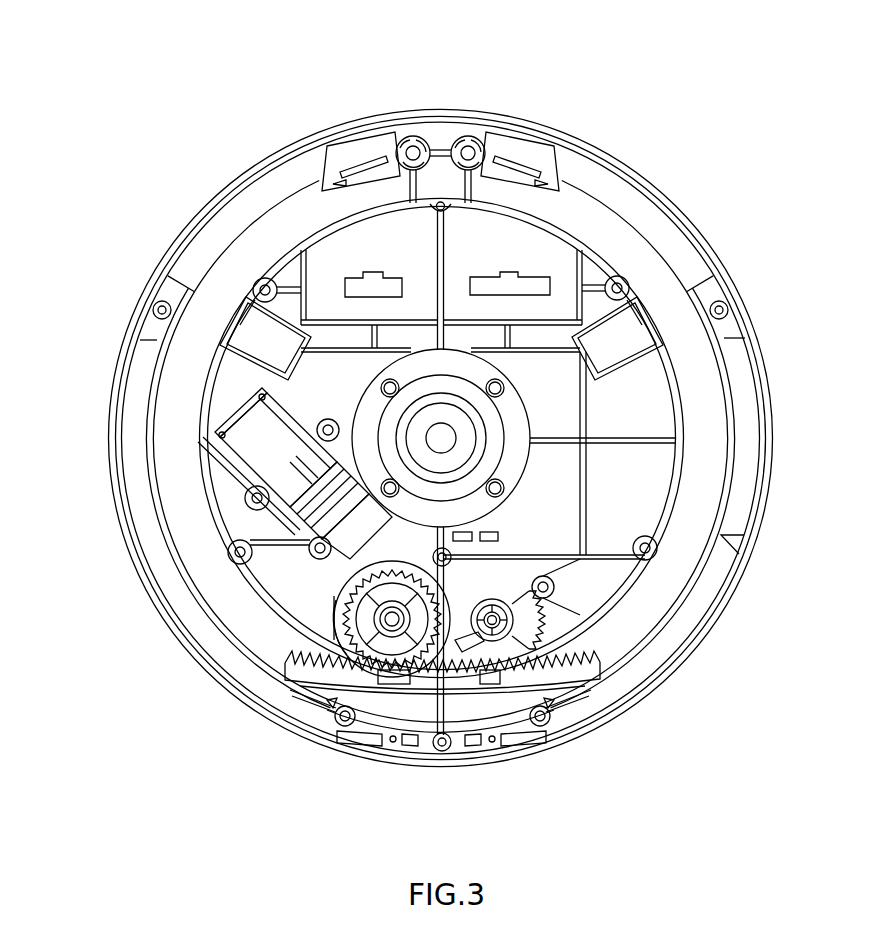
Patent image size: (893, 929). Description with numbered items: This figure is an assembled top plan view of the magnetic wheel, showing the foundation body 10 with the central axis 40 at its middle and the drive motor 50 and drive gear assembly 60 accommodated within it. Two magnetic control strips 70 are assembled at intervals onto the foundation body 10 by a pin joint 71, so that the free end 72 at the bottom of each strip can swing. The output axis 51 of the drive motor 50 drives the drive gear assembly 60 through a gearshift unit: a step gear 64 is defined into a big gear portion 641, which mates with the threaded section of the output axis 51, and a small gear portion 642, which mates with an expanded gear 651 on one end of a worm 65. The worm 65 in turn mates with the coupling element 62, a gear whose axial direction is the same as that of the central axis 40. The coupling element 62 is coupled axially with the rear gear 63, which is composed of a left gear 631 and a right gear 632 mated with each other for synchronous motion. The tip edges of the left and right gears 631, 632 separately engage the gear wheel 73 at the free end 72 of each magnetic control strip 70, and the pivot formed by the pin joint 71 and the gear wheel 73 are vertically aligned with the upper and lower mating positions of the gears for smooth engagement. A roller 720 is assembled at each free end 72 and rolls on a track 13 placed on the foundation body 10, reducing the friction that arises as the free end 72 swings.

The foundation body 10 is at (662, 588).
The track 13 is at (462, 725).
The central axis 40 is at (492, 437).
The drive motor 50 is at (247, 458).
The output axis 51 is at (330, 527).
The drive gear assembly 60 is at (605, 632).
The coupling element 62 is at (454, 588).
The rear gear 63 is at (605, 688).
The left gear 631 is at (530, 652).
The right gear 632 is at (540, 637).
The step gear 64 is at (203, 479).
The big gear portion 641 is at (300, 472).
The small gear portion 642 is at (337, 480).
The worm 65 is at (304, 663).
The expanded gear 651 is at (320, 587).
The magnetic control strip 70 is at (150, 480).
The pin joint 71 is at (420, 128).
The free end 72 is at (347, 718).
The roller 720 is at (333, 707).
The gear wheel 73 is at (380, 668).